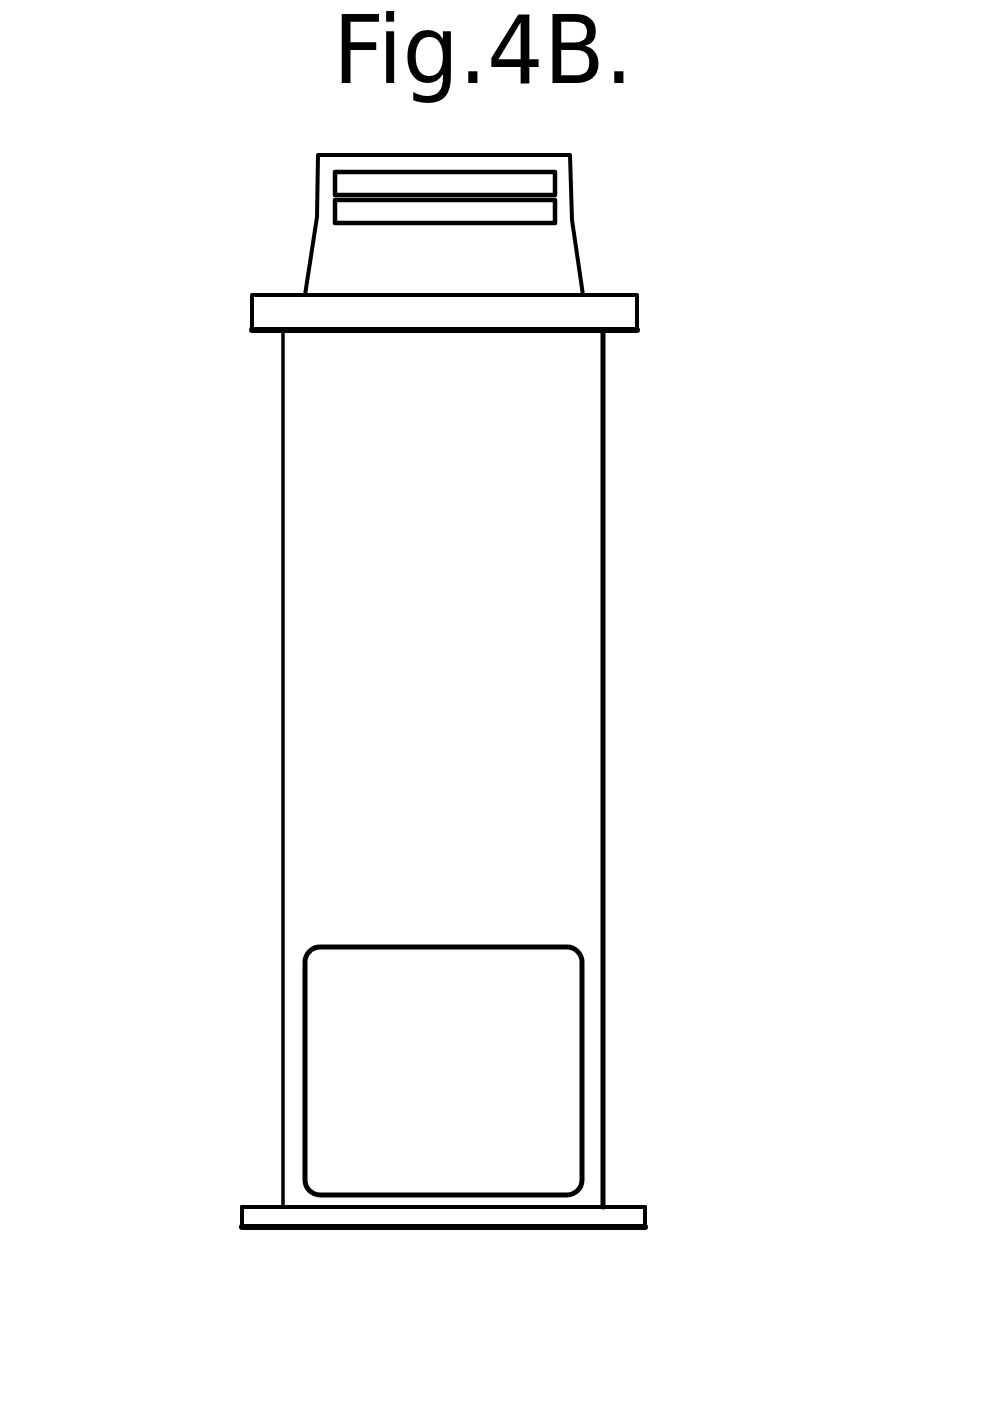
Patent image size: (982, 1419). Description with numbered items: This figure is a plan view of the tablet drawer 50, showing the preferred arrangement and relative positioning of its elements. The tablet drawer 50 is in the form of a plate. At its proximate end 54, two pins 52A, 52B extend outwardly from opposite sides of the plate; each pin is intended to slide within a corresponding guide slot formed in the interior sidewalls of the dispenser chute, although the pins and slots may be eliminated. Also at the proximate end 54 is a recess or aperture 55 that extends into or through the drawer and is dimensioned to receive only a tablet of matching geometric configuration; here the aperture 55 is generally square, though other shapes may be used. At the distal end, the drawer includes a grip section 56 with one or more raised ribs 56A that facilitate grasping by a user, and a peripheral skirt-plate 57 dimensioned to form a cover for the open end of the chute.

The tablet drawer 50 is at (604, 615).
The pin 52A is at (645, 1215).
The pin 52B is at (242, 1215).
The proximate end 54 is at (457, 1228).
The recess or aperture 55 is at (557, 1012).
The grip section 56 is at (575, 230).
The raised ribs 56A is at (335, 176).
The peripheral skirt-plate 57 is at (252, 305).